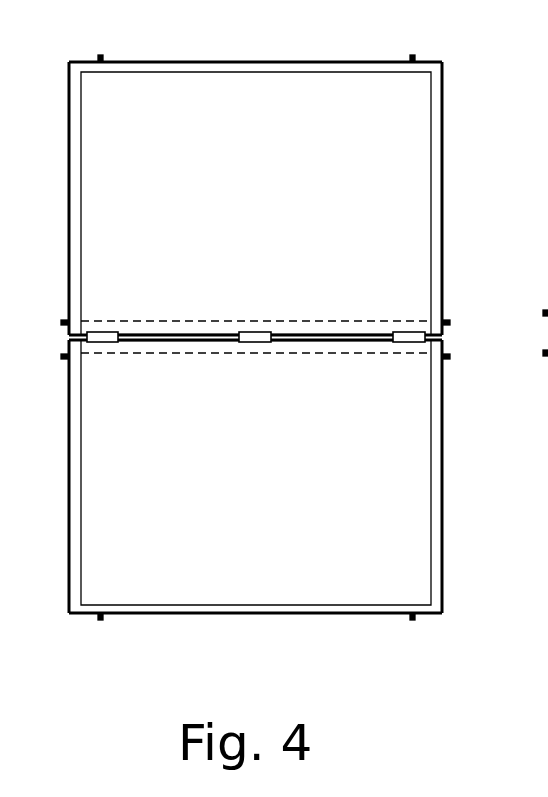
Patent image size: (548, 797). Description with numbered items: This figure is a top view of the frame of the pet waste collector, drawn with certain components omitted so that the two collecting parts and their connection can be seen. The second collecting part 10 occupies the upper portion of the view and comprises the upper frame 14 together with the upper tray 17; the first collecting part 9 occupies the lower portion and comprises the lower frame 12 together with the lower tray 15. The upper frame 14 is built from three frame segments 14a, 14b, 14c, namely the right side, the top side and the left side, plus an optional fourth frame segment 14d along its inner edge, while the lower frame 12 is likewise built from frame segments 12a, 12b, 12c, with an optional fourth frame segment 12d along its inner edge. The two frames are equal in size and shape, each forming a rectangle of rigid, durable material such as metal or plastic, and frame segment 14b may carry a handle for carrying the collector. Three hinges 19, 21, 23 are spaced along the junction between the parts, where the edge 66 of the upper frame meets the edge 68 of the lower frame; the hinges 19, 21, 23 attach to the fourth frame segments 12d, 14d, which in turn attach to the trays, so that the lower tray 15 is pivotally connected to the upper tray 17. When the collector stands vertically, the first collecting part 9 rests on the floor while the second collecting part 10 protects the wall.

The first collecting part 9 is at (280, 503).
The second collecting part 10 is at (281, 180).
The lower frame 12 is at (259, 503).
The frame segment 12a is at (435, 542).
The frame segment 12b is at (277, 608).
The frame segment 12c is at (72, 503).
The fourth frame segment 12d is at (268, 350).
The upper frame 14 is at (267, 180).
The frame segment 14a is at (440, 211).
The frame segment 14b is at (175, 68).
The frame segment 14c is at (72, 178).
The fourth frame segment 14d is at (230, 322).
The lower tray 15 is at (417, 437).
The upper tray 17 is at (429, 130).
The hinge 19 is at (105, 337).
The hinge 21 is at (255, 335).
The hinge 23 is at (415, 335).
The edge 66 is at (183, 333).
The edge 68 is at (205, 342).